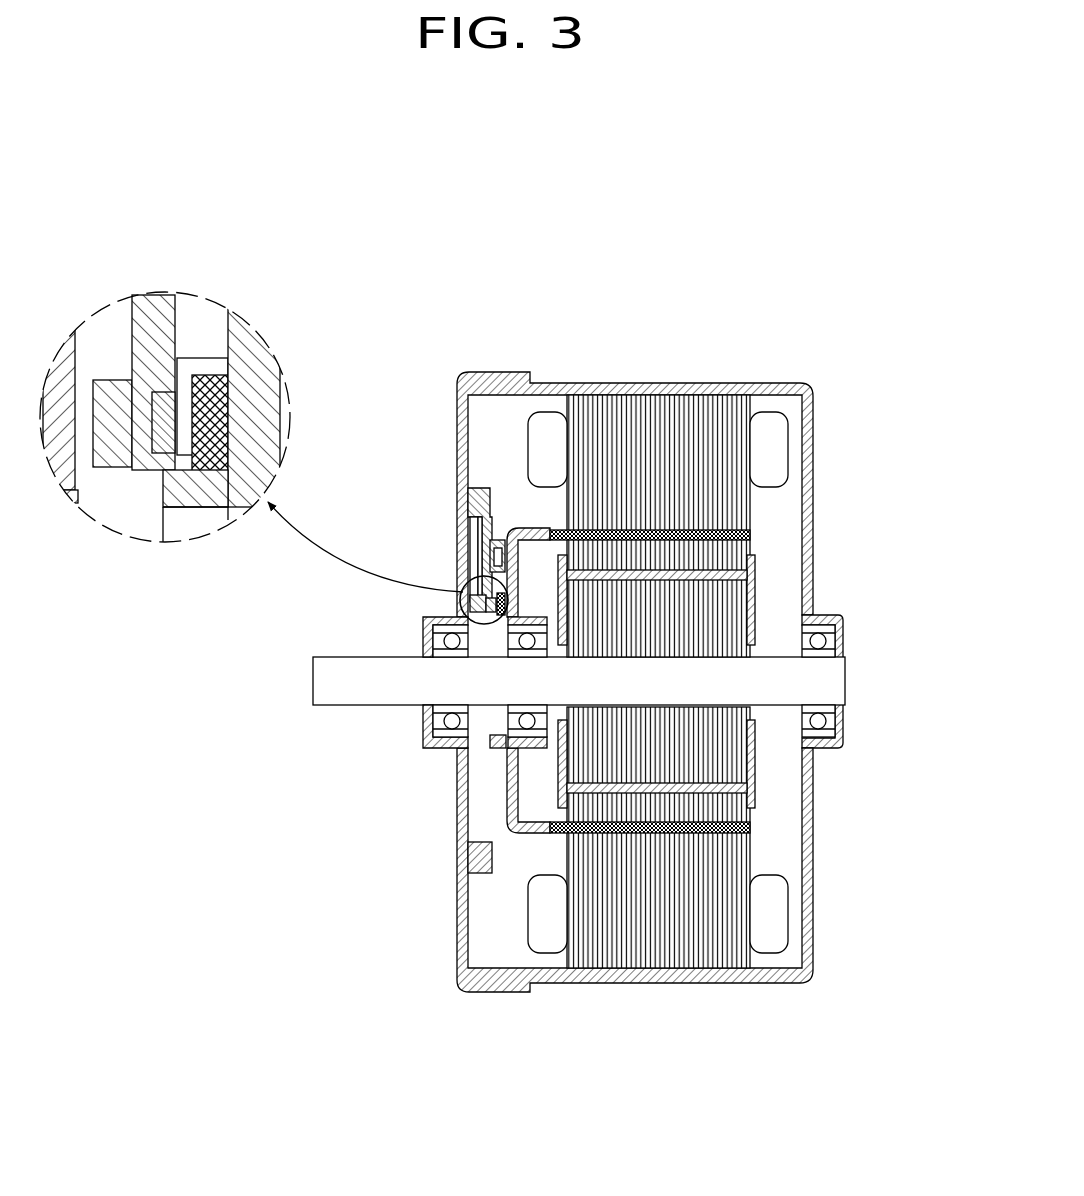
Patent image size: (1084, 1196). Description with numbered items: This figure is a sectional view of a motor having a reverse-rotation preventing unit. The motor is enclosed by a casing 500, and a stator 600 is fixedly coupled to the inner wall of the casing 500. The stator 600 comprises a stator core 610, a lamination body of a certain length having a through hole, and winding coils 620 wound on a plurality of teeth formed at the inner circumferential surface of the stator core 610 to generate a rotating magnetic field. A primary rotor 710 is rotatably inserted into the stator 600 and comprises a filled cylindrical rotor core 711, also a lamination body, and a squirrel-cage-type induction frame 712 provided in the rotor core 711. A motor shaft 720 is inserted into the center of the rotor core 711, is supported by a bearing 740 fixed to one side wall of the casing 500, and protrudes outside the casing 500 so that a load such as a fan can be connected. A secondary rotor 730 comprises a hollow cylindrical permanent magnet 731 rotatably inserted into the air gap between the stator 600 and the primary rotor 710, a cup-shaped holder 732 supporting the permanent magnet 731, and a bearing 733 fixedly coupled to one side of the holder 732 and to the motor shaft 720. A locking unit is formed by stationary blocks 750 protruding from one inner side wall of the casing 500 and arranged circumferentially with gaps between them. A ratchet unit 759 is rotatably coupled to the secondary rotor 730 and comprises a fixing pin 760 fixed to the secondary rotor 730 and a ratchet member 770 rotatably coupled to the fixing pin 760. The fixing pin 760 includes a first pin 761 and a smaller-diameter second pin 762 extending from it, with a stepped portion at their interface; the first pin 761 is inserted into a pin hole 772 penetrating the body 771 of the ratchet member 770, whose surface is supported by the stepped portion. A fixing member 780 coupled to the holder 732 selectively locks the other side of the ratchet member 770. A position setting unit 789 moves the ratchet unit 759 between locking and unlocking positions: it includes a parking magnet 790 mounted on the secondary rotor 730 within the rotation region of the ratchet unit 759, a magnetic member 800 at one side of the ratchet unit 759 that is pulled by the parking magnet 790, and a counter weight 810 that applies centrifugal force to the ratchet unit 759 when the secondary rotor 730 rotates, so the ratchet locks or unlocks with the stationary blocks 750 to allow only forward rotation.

The casing 500 is at (806, 371).
The stator 600 is at (748, 681).
The stator core 610 is at (735, 503).
The winding coils 620 is at (768, 450).
The primary rotor 710 is at (733, 689).
The rotor core 711 is at (720, 812).
The induction frame 712 is at (738, 787).
The motor shaft 720 is at (313, 684).
The secondary rotor 730 is at (639, 788).
The permanent magnet 731 is at (752, 829).
The holder 732 is at (545, 833).
The bearing 733 is at (498, 735).
The bearing 740 is at (425, 728).
The stationary blocks 750 is at (469, 472).
The ratchet unit 759 is at (522, 388).
The fixing pin 760 is at (508, 533).
The first pin 761 is at (474, 527).
The second pin 762 is at (478, 548).
The ratchet member 770 is at (503, 490).
The body 771 is at (494, 578).
The pin hole 772 is at (490, 566).
The fixing member 780 is at (495, 758).
The position setting unit 789 is at (285, 412).
The parking magnet 790 is at (468, 590).
The magnetic member 800 is at (462, 613).
The counter weight 810 is at (466, 605).